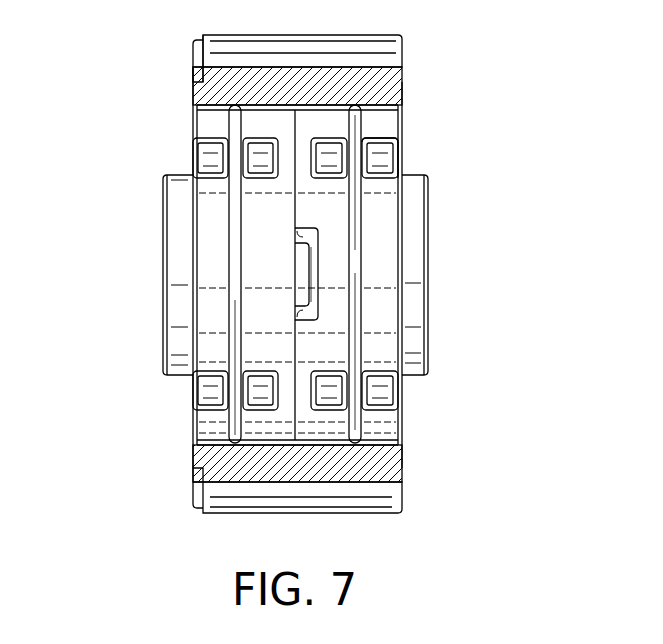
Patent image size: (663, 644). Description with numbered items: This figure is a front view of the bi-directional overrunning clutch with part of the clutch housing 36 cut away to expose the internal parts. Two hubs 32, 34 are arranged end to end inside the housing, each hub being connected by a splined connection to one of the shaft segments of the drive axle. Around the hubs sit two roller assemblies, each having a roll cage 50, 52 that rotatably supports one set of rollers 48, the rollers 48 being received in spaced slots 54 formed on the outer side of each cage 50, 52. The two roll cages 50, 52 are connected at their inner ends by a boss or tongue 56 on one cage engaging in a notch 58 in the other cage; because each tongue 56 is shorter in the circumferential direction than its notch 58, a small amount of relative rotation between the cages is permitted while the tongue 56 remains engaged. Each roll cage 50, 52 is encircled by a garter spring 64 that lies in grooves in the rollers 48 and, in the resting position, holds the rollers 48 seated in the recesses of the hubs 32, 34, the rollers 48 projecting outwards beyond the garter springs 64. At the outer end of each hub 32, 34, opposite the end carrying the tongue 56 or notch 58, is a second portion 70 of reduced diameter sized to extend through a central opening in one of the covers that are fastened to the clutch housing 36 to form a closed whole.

The hub 32 is at (180, 240).
The hub 34 is at (410, 298).
The clutch housing 36 is at (385, 50).
The rollers 48 is at (200, 160).
The roll cage 50 is at (212, 318).
The roll cage 52 is at (380, 212).
The slots 54 is at (380, 155).
The tongue 56 is at (302, 278).
The notch 58 is at (310, 245).
The garter spring 64 is at (232, 211).
The second portion 70 is at (178, 358).